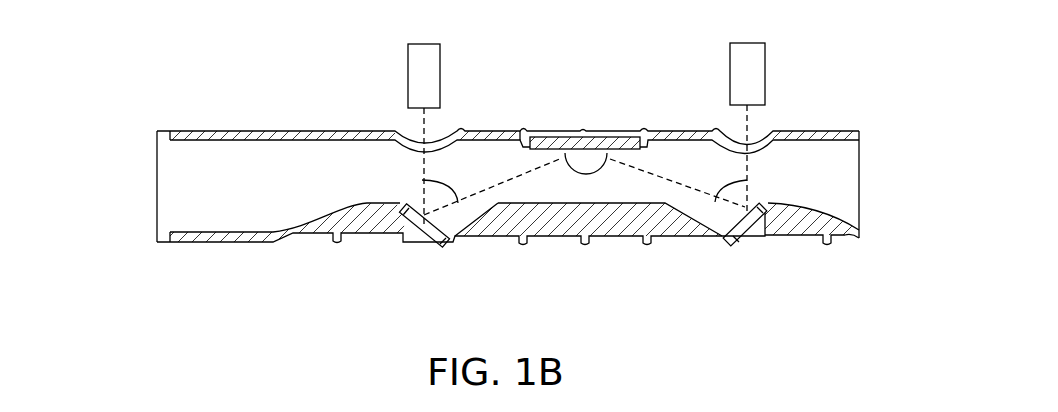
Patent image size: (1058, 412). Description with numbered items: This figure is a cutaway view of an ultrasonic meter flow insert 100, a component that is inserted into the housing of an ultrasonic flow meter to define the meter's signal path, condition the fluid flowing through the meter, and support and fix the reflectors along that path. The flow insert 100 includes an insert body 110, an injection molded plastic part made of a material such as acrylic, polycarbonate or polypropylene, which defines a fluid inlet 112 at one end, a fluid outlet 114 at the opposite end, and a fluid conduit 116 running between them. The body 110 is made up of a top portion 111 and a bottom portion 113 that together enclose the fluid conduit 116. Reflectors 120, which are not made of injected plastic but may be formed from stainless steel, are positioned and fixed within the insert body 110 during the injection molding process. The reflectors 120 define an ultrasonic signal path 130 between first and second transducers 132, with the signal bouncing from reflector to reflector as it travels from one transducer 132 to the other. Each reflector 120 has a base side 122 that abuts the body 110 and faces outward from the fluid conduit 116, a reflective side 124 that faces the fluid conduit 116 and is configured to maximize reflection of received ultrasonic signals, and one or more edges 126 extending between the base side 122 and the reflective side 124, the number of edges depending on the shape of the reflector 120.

The ultrasonic meter flow insert 100 is at (915, 77).
The insert body 110 is at (826, 131).
The top portion 111 is at (860, 135).
The fluid inlet 112 is at (157, 193).
The bottom portion 113 is at (860, 233).
The fluid outlet 114 is at (860, 185).
The fluid conduit 116 is at (302, 181).
The reflector 120 is at (447, 243).
The base side 122 is at (566, 131).
The reflective side 124 is at (530, 150).
The edge 126 is at (522, 138).
The ultrasonic signal path 130 is at (748, 158).
The transducer 132 is at (440, 62).